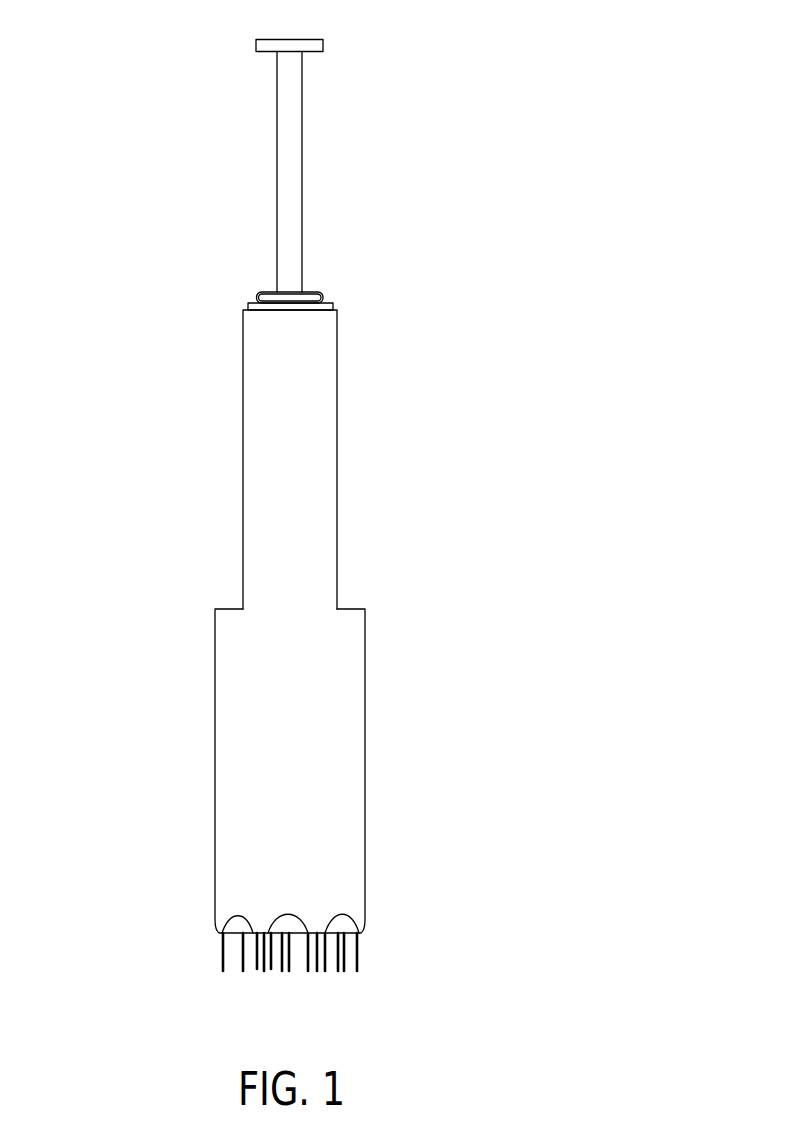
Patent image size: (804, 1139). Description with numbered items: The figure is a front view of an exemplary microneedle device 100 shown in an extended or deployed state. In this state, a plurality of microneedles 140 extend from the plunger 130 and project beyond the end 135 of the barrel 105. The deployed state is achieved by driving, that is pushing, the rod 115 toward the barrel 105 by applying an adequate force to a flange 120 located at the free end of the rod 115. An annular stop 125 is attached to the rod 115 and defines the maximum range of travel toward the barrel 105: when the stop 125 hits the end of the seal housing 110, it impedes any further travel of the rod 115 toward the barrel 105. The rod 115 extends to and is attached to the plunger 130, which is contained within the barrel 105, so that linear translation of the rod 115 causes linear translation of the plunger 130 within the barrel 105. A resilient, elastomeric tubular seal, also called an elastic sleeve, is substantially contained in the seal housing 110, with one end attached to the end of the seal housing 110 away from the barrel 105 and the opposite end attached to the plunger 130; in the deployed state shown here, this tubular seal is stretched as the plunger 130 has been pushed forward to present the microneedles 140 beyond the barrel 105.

The microneedle device 100 is at (308, 506).
The barrel 105 is at (215, 754).
The seal housing 110 is at (243, 457).
The rod 115 is at (302, 173).
The flange 120 is at (323, 40).
The annular stop 125 is at (327, 303).
The plunger 130 is at (283, 930).
The end of the barrel 135 is at (340, 925).
The microneedles 140 is at (223, 972).